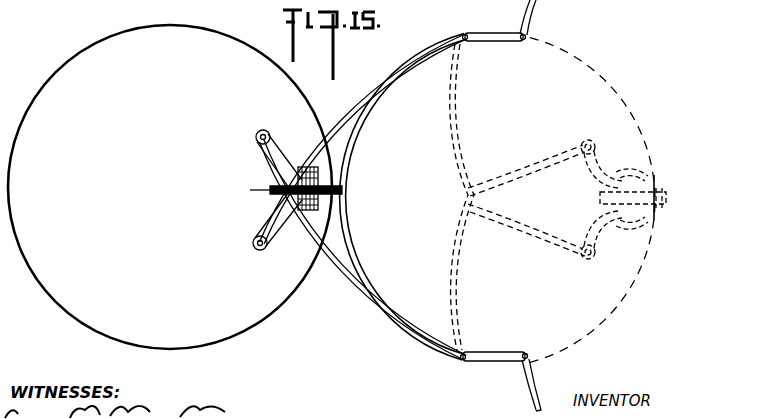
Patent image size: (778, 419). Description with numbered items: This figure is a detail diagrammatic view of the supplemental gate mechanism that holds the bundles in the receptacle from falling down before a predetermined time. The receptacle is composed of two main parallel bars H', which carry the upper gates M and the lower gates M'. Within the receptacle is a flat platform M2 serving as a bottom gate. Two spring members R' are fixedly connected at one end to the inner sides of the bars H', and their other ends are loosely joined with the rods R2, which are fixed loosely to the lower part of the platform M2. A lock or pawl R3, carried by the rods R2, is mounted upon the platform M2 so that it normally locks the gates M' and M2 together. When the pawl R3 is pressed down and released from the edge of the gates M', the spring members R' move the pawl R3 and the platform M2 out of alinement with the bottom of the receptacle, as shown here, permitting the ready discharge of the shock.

The flat platform M2 is at (170, 187).
The upper gate M is at (403, 197).
The lower gate M' is at (587, 205).
The main parallel bar H' is at (494, 197).
The spring member R' is at (423, 198).
The rod R2 is at (605, 252).
The lock or pawl R3 is at (600, 198).